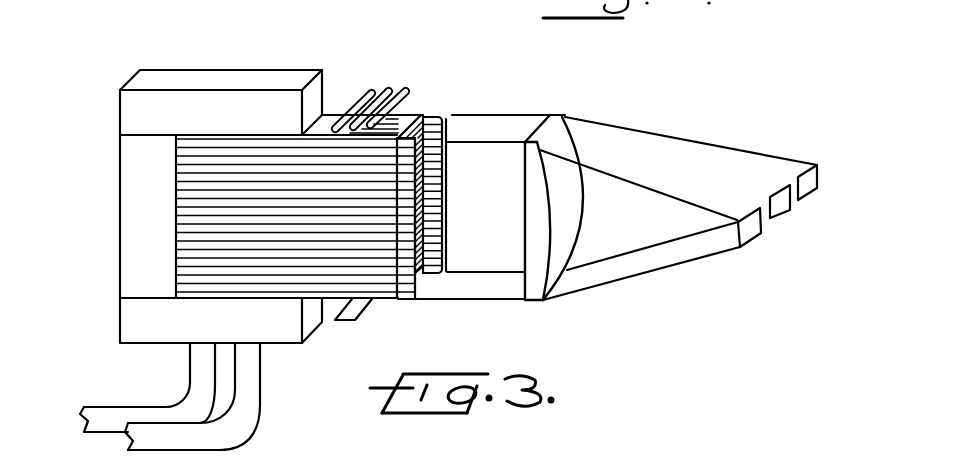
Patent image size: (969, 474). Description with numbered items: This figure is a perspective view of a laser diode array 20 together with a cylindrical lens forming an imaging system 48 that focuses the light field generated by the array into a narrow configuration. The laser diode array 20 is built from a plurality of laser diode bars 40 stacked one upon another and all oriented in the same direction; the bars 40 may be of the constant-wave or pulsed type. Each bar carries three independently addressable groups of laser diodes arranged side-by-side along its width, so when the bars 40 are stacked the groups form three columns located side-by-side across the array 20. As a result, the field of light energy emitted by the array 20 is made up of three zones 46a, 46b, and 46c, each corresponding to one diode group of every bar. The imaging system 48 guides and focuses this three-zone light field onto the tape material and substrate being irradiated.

The laser diode array 20 is at (221, 66).
The laser diode bars 40 is at (176, 200).
The imaging system 48 is at (528, 207).
The first zone of the light field 46a is at (818, 166).
The second zone of the light field 46b is at (782, 197).
The third zone of the light field 46c is at (750, 233).